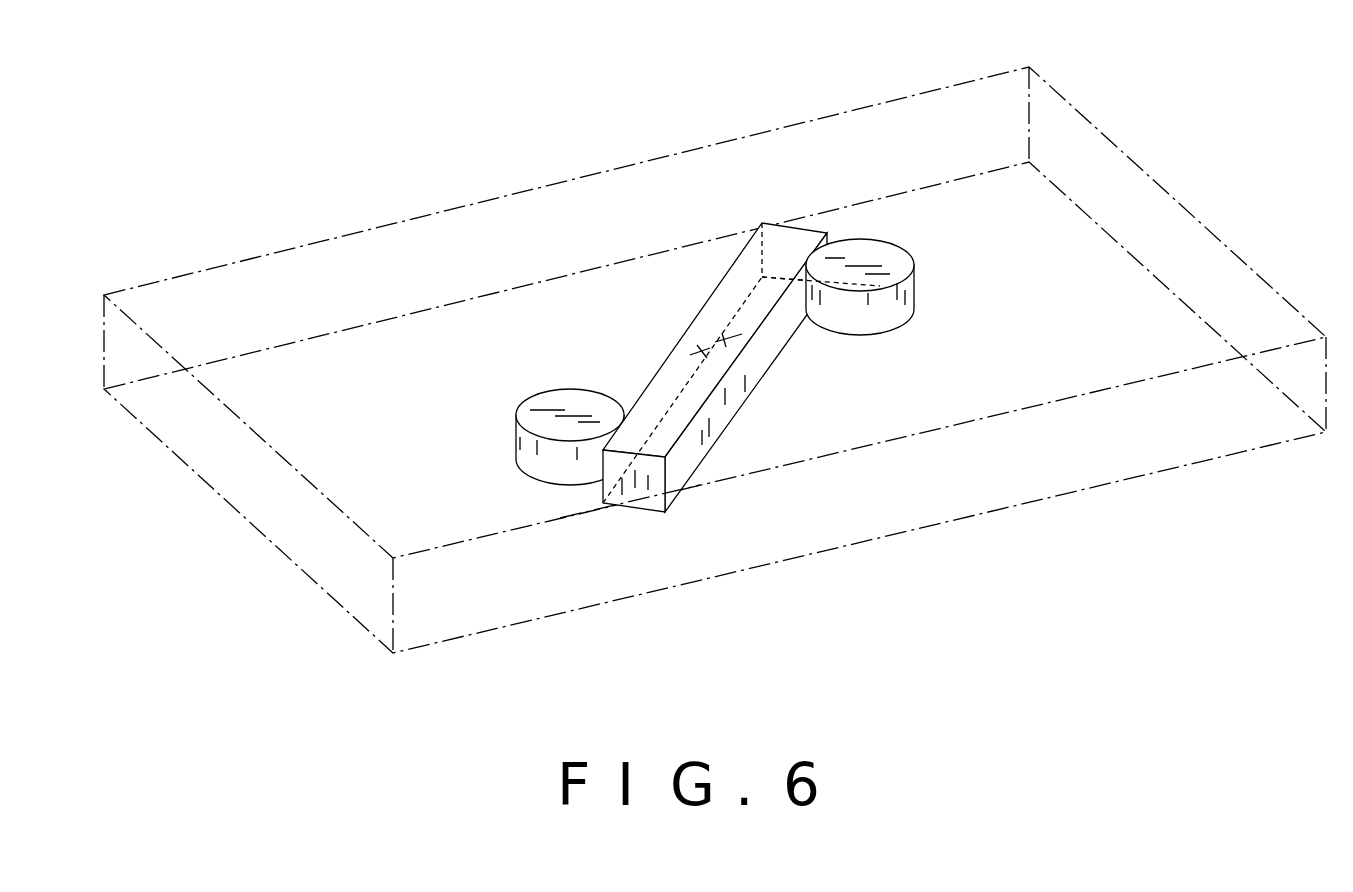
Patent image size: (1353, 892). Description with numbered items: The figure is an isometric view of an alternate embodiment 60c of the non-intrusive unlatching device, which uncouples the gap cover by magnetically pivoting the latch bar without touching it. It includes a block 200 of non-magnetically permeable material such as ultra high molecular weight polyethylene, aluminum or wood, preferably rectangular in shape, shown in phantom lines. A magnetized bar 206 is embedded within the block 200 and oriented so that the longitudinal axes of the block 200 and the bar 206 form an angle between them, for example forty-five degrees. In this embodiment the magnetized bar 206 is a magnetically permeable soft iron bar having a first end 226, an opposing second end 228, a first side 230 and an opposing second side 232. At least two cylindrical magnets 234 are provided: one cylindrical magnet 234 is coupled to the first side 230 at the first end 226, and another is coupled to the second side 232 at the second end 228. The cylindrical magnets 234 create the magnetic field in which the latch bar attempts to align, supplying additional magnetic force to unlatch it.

The alternate embodiment of unlatching device 60c is at (580, 133).
The block 200 is at (1173, 200).
The magnetized bar 206 is at (743, 401).
The first end 226 is at (787, 247).
The second end 228 is at (636, 478).
The first side 230 is at (770, 342).
The second side 232 is at (667, 357).
The cylindrical magnet 234 is at (547, 410).